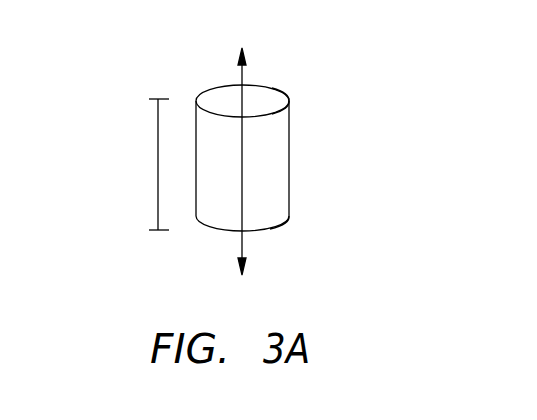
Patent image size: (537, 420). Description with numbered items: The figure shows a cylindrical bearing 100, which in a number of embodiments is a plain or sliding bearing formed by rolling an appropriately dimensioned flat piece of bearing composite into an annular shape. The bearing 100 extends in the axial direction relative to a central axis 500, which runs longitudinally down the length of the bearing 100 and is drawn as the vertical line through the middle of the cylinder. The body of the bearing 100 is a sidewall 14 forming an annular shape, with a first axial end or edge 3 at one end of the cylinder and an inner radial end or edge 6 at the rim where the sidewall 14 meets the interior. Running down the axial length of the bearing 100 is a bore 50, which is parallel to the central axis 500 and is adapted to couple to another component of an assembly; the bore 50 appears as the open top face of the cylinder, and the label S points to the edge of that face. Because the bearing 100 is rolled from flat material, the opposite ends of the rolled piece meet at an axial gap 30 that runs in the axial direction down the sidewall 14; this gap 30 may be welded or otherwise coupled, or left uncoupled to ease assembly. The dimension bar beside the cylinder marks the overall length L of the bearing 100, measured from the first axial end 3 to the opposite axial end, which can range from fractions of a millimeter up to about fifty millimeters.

The bearing 100 is at (287, 146).
The sidewall 14 is at (289, 172).
The bore 50 is at (210, 88).
The edge of top surface S is at (290, 98).
The inner radial end or edge 6 is at (291, 103).
The axial gap 30 is at (237, 220).
The first axial end or edge 3 is at (290, 217).
The central axis 500 is at (245, 79).
The overall length L is at (157, 168).